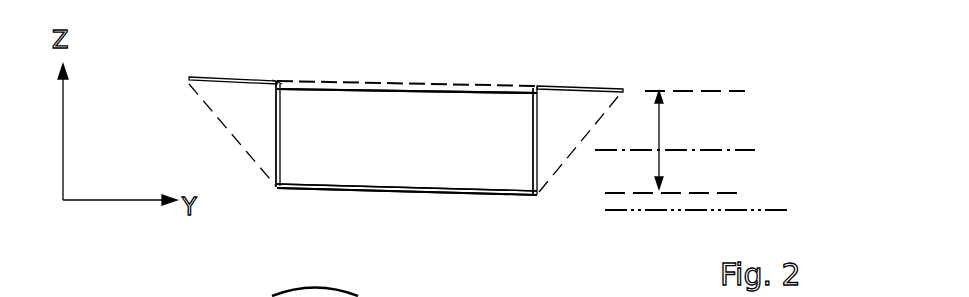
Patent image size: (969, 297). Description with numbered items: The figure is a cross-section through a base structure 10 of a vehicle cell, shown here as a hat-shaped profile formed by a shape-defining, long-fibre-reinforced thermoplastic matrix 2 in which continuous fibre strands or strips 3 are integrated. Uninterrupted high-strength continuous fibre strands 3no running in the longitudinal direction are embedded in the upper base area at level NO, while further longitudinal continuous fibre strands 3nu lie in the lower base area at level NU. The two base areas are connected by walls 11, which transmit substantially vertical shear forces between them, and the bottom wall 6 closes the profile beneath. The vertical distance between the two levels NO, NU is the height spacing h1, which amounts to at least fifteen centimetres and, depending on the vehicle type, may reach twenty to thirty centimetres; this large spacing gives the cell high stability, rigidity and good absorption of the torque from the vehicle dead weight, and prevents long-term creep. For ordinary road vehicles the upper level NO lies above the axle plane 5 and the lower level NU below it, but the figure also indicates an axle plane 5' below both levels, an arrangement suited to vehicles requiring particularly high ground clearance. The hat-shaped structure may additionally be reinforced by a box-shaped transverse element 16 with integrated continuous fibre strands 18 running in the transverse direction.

The long-fibre-reinforced thermoplastic matrix 2 is at (476, 188).
The continuous fibre strands or strips 3 is at (520, 196).
The upper continuous fibre strands 3no is at (266, 72).
The lower continuous fibre strands 3nu is at (311, 191).
The axle plane 5 is at (690, 140).
The axle plane 5' is at (713, 212).
The bottom wall 6 is at (362, 184).
The base structure 10 is at (279, 79).
The walls 11 is at (277, 128).
The box-shaped transverse element 16 is at (384, 82).
The transverse continuous fibre strands 18 is at (440, 92).
The height spacing h1 is at (661, 130).
The upper base area level NO is at (719, 82).
The lower base area level NU is at (698, 192).